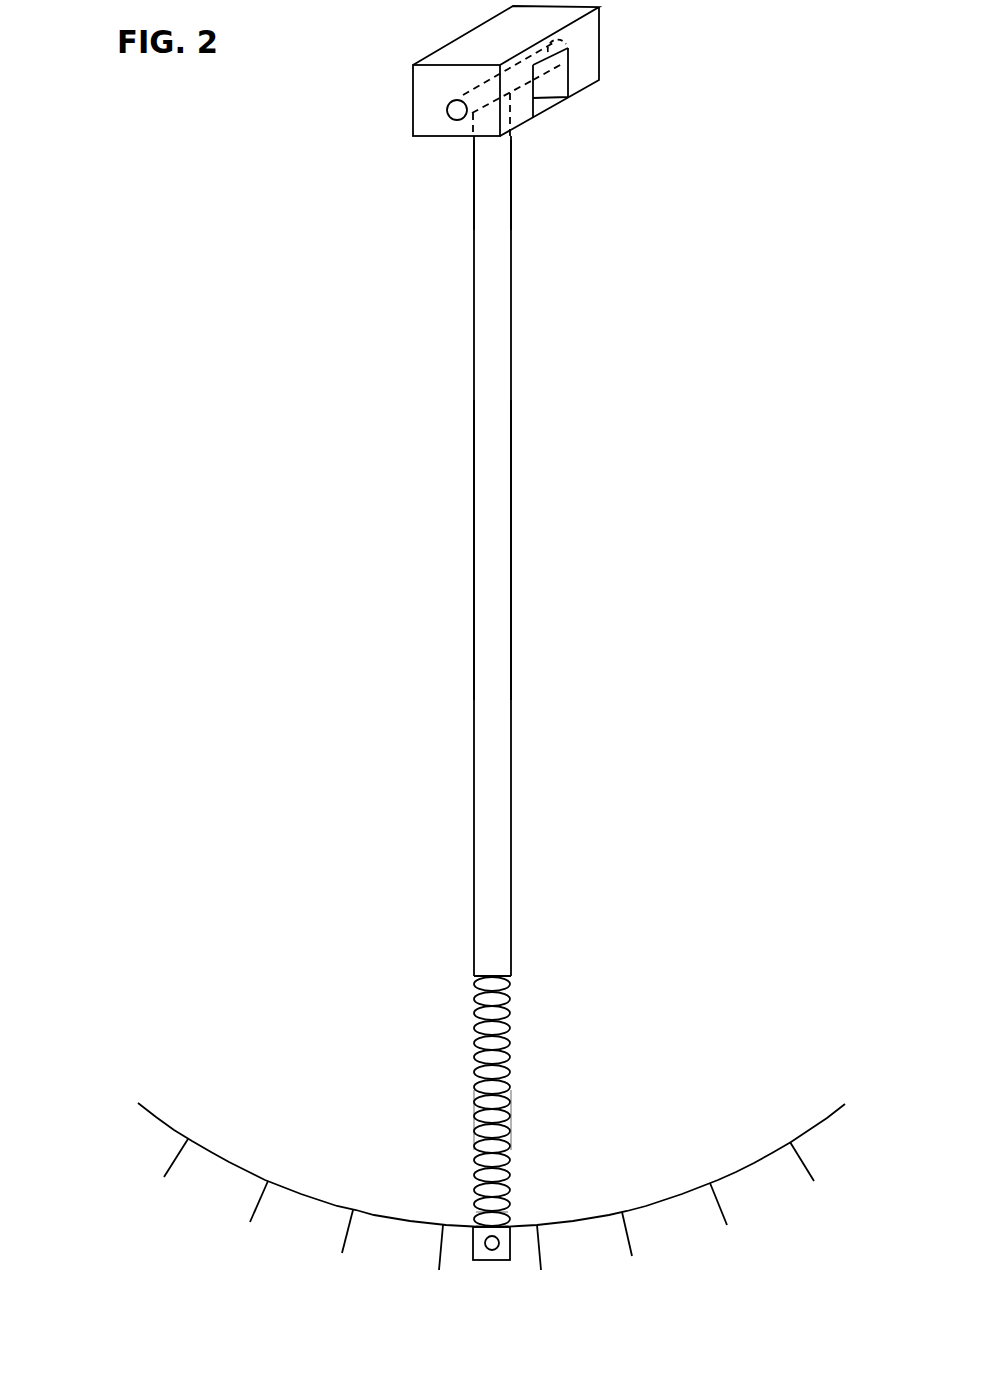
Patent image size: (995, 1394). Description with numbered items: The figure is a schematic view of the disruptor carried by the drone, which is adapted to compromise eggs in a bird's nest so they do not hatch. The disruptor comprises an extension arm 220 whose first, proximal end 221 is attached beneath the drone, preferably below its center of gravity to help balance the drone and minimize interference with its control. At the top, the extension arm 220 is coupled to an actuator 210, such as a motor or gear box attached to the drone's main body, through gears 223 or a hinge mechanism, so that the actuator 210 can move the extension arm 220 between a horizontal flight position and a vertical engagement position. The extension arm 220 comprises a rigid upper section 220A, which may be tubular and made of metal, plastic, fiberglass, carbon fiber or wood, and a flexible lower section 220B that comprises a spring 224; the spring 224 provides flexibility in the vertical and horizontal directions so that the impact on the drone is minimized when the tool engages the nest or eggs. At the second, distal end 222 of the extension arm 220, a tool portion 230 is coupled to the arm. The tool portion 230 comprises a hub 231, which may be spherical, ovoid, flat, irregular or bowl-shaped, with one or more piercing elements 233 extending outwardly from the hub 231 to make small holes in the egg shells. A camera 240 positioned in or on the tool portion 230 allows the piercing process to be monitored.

The actuator 210 is at (403, 95).
The gears 223 is at (558, 113).
The extension arm 220 is at (492, 650).
The first (proximal) end 221 is at (485, 178).
The upper section 220A is at (510, 608).
The lower section 220B is at (510, 1140).
The coil spring 224 is at (510, 1110).
The second (distal) end 222 is at (490, 1217).
The camera 240 is at (495, 1258).
The tool portion 230 is at (300, 1240).
The hub 231 is at (653, 1204).
The piercing elements 233 is at (175, 1160).